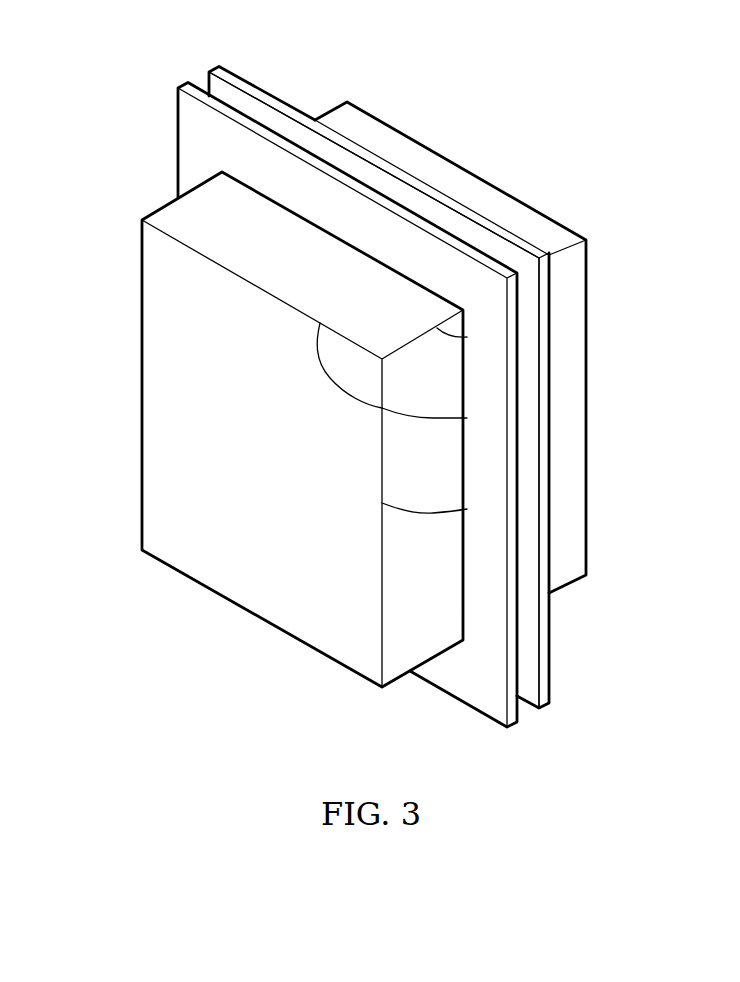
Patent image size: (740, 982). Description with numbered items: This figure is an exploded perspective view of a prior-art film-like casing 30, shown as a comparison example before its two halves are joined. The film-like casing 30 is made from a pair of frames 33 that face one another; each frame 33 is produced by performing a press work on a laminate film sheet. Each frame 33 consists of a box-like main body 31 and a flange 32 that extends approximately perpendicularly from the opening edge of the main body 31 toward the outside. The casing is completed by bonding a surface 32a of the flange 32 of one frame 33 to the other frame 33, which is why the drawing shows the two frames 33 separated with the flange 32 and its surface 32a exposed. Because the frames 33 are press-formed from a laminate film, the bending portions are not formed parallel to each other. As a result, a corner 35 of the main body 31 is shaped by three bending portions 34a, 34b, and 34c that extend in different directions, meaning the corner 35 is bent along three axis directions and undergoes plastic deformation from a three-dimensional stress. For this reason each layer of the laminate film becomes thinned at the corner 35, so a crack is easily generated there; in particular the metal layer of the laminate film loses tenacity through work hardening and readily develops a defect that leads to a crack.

The film-like casing 30 is at (518, 113).
The main body 31 is at (165, 390).
The flange 32 is at (200, 117).
The surface of flange 32a is at (220, 100).
The frame 33 is at (538, 180).
The bending portion 34a is at (467, 337).
The bending portion 34b is at (467, 509).
The bending portion 34c is at (467, 418).
The corner 35 is at (382, 359).